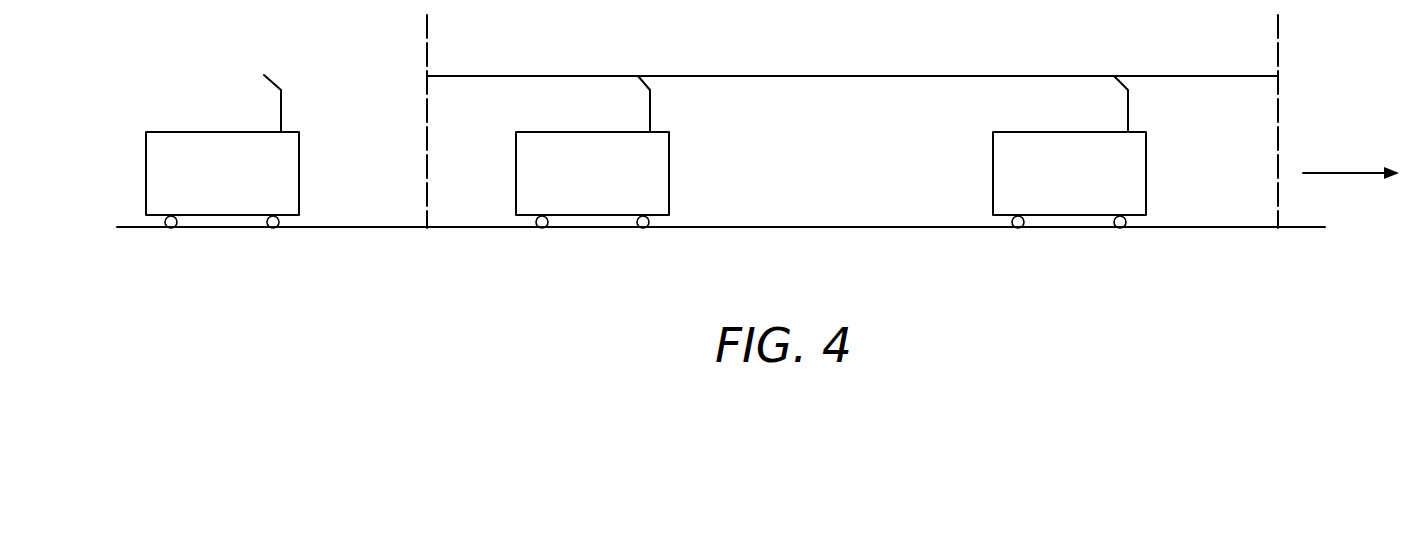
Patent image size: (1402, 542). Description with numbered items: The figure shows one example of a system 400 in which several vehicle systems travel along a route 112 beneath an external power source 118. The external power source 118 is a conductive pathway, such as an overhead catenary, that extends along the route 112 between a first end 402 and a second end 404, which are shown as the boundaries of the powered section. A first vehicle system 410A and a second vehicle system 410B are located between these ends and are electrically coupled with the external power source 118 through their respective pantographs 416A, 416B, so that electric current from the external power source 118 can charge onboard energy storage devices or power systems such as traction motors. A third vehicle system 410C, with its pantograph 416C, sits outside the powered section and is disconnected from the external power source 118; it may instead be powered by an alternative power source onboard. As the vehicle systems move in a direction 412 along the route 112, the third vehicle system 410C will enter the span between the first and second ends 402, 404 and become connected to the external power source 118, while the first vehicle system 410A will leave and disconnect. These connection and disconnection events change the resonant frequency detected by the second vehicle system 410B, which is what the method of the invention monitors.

The system 400 is at (188, 34).
The first end 402 is at (1280, 62).
The second end 404 is at (426, 77).
The external power source 118 is at (853, 75).
The route 112 is at (1220, 229).
The direction 412 is at (1352, 172).
The first vehicle system 410A is at (1070, 192).
The second vehicle system 410B is at (593, 192).
The third vehicle system 410C is at (223, 192).
The pantograph 416A is at (1129, 105).
The pantograph 416B is at (651, 105).
The pantograph 416C is at (282, 108).